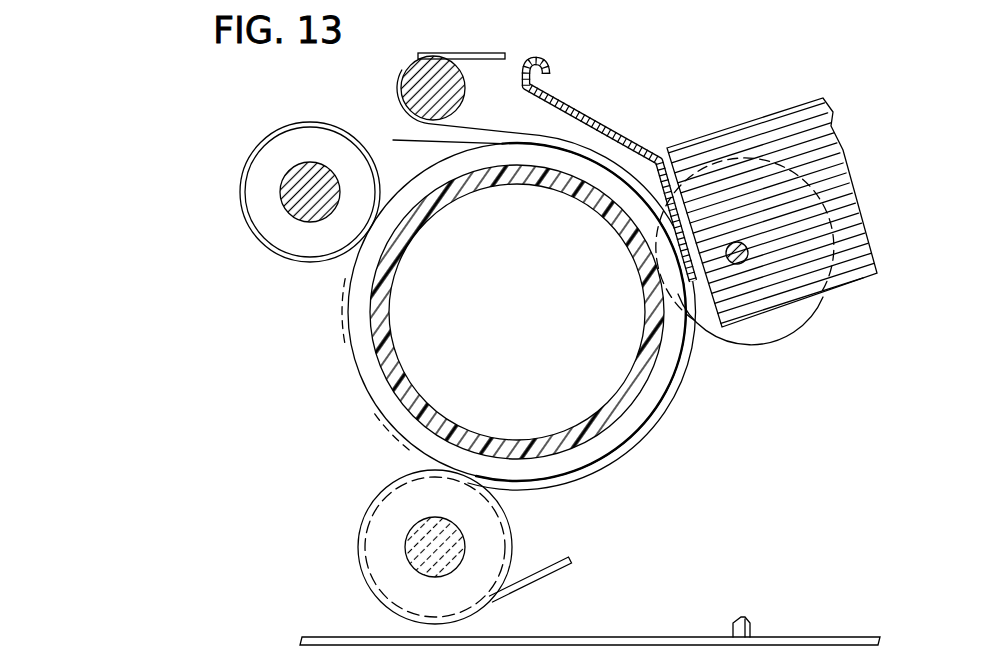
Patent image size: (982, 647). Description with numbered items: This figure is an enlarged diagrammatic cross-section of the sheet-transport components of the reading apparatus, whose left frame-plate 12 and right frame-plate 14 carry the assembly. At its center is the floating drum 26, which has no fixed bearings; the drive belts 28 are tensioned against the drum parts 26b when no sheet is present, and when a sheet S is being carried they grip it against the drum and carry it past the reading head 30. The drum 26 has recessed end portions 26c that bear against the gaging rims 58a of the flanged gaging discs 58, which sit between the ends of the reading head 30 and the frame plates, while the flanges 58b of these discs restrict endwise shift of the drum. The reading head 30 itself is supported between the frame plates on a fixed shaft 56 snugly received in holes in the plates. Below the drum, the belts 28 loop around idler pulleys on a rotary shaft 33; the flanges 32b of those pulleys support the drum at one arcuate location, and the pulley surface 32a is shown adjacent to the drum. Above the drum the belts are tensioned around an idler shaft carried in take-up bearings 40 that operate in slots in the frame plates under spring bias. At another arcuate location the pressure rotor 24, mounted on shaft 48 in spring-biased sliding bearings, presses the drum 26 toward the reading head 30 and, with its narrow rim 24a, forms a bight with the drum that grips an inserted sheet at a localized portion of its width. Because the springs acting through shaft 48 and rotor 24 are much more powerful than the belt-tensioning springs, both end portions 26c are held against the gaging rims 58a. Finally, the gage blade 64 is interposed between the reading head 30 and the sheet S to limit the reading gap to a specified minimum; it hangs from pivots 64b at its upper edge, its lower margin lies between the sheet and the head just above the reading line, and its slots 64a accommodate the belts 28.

The left frame-plate 12 is at (700, 637).
The right frame-plate 14 is at (173, 180).
The pressure rotor 24 is at (295, 188).
The narrow rim 24a is at (313, 121).
The drum 26 is at (356, 372).
The drum parts 26b is at (348, 318).
The end portions of drum 26c is at (653, 377).
The drive belts 28 is at (478, 52).
The reading head 30 is at (778, 109).
The roller outer surface 32a is at (500, 506).
The flanges of pulleys 32b is at (358, 557).
The rotary shaft 33 is at (413, 535).
The take-up bearings 40 is at (421, 69).
The shaft 48 is at (293, 208).
The fixed shaft 56 is at (740, 264).
The flanged gaging discs 58 is at (832, 212).
The gaging rims 58a is at (720, 329).
The flanges 58b is at (816, 312).
The gage blade 64 is at (609, 157).
The slots 64a is at (660, 230).
The pivots 64b is at (537, 60).
The sheet S is at (398, 140).